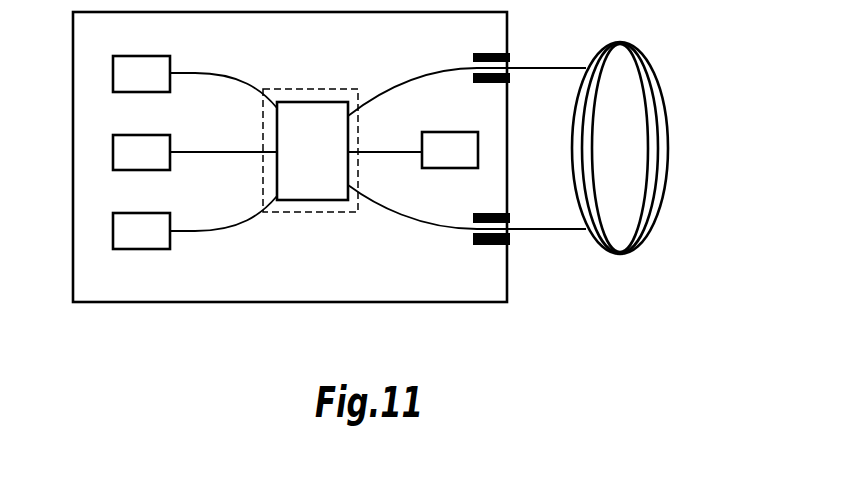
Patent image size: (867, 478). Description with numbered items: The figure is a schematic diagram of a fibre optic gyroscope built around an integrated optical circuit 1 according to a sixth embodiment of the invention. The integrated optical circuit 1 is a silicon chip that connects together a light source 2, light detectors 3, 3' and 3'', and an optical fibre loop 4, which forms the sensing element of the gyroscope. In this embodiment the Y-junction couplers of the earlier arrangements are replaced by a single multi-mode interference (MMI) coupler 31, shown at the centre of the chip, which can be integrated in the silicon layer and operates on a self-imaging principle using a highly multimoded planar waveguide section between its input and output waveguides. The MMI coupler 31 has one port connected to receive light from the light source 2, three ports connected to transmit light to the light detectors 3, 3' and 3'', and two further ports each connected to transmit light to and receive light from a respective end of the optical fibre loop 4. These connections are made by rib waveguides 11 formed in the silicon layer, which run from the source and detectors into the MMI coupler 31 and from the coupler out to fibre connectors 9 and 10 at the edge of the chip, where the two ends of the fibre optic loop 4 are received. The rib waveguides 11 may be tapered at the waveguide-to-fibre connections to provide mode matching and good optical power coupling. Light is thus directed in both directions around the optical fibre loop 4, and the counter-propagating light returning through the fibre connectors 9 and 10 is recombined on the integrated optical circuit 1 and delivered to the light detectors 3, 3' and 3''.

The integrated optical circuit 1 is at (352, 284).
The light source 2 is at (113, 152).
The light detector 3 is at (160, 81).
The light detector 3' is at (159, 222).
The light detector 3'' is at (413, 128).
The optical fibre loop 4 is at (665, 98).
The fibre connector 9 is at (509, 66).
The fibre connector 10 is at (509, 232).
The rib waveguides 11 is at (200, 73).
The multi-mode interference (MMI) coupler 31 is at (315, 88).